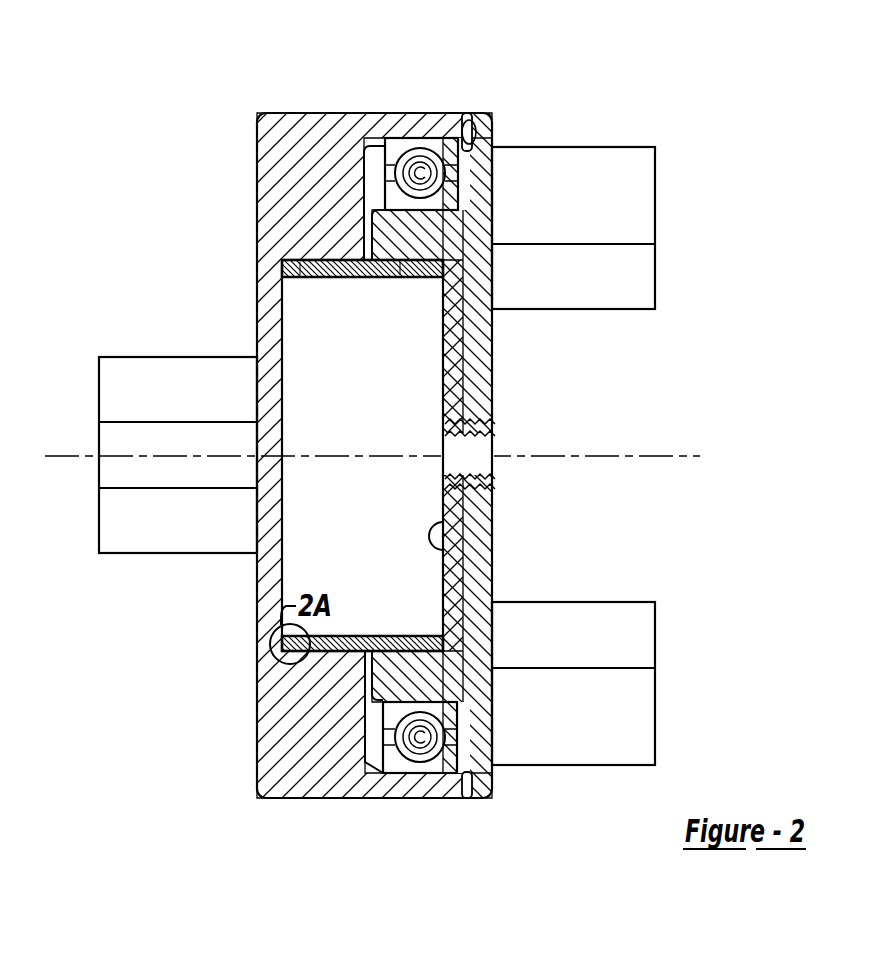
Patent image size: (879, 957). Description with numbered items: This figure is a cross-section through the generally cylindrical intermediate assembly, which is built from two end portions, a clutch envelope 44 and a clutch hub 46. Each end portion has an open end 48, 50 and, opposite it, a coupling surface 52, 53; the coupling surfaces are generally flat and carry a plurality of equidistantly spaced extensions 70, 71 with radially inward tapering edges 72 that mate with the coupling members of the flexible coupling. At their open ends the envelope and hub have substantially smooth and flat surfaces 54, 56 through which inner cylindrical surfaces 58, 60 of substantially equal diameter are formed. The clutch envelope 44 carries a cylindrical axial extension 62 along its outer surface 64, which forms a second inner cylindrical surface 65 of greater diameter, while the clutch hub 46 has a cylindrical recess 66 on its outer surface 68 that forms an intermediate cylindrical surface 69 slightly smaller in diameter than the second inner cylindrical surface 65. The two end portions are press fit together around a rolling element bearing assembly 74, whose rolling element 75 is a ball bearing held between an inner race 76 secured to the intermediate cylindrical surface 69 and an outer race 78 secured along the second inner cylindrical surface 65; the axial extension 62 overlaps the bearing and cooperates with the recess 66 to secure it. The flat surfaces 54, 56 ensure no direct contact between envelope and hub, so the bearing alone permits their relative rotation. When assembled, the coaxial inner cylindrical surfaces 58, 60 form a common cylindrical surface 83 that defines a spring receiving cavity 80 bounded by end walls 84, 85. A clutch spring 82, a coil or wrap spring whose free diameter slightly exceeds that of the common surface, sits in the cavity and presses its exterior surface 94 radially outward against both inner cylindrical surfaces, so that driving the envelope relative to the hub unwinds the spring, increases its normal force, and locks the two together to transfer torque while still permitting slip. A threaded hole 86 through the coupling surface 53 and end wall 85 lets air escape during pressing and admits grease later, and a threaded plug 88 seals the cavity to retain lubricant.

The clutch envelope 44 is at (318, 112).
The clutch hub 46 is at (381, 409).
The open end 48 is at (450, 218).
The open end 50 is at (370, 230).
The coupling surface 52 is at (257, 774).
The coupling surface 53 is at (469, 455).
The smooth flat surface 54 is at (373, 693).
The smooth flat surface 56 is at (365, 675).
The inner cylindrical surface 58 is at (303, 278).
The inner cylindrical surface 60 is at (410, 278).
The cylindrical axial extension 62 is at (341, 123).
The outer surface 64 is at (378, 112).
The second inner cylindrical surface 65 is at (478, 120).
The cylindrical recess 66 is at (468, 150).
The outer surface 68 is at (487, 124).
The intermediate cylindrical surface 69 is at (387, 205).
The extensions 70 is at (99, 446).
The extensions 71 is at (655, 719).
The radially inward tapering edges 72 is at (597, 682).
The rolling element bearing assembly 74 is at (395, 776).
The rolling element 75 is at (413, 757).
The inner race 76 is at (393, 710).
The outer race 78 is at (390, 770).
The spring receiving cavity 80 is at (305, 566).
The clutch spring 82 is at (365, 624).
The common cylindrical surface 83 is at (367, 278).
The end wall 84 is at (284, 426).
The end wall 85 is at (443, 552).
The threaded hole 86 is at (462, 432).
The threaded plug 88 is at (477, 449).
The exterior surface 94 is at (440, 697).